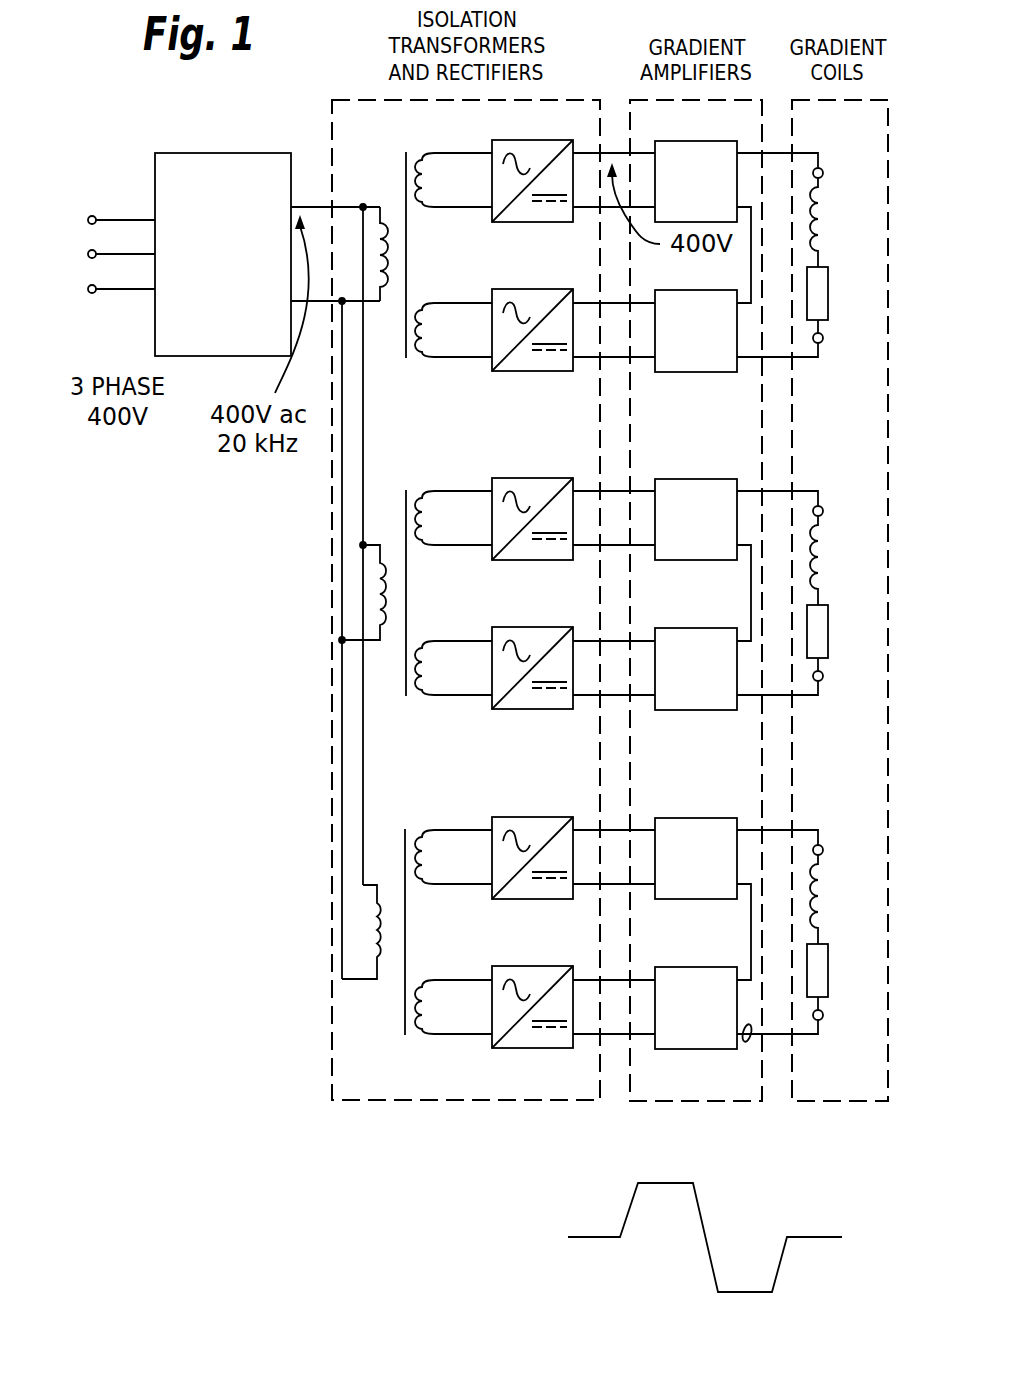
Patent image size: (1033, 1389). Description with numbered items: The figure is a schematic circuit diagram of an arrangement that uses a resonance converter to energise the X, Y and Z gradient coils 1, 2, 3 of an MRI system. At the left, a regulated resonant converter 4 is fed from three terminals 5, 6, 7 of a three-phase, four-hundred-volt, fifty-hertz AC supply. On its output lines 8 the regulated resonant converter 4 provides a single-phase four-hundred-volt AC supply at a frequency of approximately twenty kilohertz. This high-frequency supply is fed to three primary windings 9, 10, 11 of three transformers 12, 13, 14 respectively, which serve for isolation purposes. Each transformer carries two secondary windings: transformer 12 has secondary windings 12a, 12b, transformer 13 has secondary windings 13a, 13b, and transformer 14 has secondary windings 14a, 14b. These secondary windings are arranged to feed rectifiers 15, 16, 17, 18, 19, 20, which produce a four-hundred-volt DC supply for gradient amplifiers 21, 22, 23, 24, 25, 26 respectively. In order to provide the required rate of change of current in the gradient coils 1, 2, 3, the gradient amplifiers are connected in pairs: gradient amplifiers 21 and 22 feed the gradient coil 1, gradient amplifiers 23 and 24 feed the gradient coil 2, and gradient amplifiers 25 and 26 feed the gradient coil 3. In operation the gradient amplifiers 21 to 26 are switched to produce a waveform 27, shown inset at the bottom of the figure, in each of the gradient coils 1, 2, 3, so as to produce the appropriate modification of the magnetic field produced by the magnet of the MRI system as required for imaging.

The X gradient coil 1 is at (828, 197).
The Y gradient coil 2 is at (828, 535).
The Z gradient coil 3 is at (828, 874).
The regulated resonant converter 4 is at (190, 153).
The terminal 5 is at (122, 218).
The terminal 6 is at (140, 253).
The terminal 7 is at (118, 290).
The output lines 8 is at (323, 304).
The primary winding 9 is at (377, 247).
The primary winding 10 is at (388, 563).
The primary winding 11 is at (383, 903).
The transformer 12 is at (500, 265).
The secondary winding 12a is at (487, 195).
The secondary winding 12b is at (487, 345).
The transformer 13 is at (500, 603).
The secondary winding 13a is at (487, 533).
The secondary winding 13b is at (487, 683).
The transformer 14 is at (500, 942).
The secondary winding 14a is at (487, 872).
The secondary winding 14b is at (487, 1022).
The rectifier 15 is at (527, 141).
The rectifier 16 is at (527, 290).
The rectifier 17 is at (527, 479).
The rectifier 18 is at (527, 628).
The rectifier 19 is at (527, 818).
The rectifier 20 is at (527, 967).
The gradient amplifier 21 is at (687, 141).
The gradient amplifier 22 is at (687, 290).
The gradient amplifier 23 is at (687, 479).
The gradient amplifier 24 is at (687, 628).
The gradient amplifier 25 is at (687, 818).
The gradient amplifier 26 is at (687, 967).
The waveform 27 is at (743, 1043).